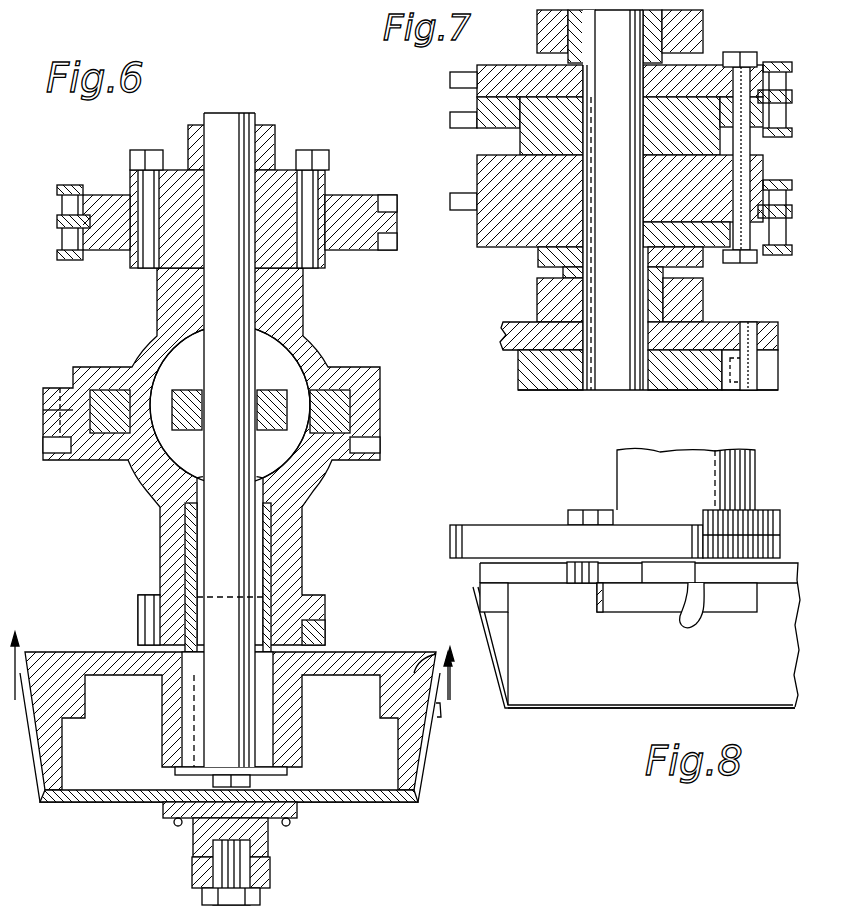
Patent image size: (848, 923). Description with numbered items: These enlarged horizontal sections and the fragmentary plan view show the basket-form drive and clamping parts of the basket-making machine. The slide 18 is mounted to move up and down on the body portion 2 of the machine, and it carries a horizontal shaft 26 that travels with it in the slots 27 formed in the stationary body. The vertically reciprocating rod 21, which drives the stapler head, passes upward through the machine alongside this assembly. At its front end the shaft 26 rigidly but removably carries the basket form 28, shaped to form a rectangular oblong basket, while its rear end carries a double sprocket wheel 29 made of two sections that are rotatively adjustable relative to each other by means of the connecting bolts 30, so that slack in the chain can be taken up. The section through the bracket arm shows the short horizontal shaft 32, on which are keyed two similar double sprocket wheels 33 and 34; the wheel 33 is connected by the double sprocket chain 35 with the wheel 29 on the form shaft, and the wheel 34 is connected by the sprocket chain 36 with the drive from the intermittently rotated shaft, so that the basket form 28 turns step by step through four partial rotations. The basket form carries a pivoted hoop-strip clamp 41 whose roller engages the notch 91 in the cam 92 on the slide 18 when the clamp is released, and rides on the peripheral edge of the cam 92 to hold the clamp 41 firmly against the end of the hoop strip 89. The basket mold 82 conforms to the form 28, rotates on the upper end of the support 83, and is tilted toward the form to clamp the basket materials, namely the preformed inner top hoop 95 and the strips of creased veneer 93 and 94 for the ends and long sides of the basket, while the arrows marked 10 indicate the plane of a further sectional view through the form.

In FIG. 6, the body portion 2 is at (305, 357).
In FIG. 6, the direction of movement arrow 10 is at (245, 660).
In FIG. 8, the direction of movement arrow 10 is at (464, 673).
In FIG. 6, the slide 18 is at (310, 488).
In FIG. 8, the slide 18 is at (630, 483).
In FIG. 6, the vertically reciprocating rod 21 is at (268, 422).
In FIG. 6, the horizontal shaft 26 is at (250, 547).
In FIG. 6, the slots 27 is at (190, 328).
In FIG. 6, the basket form 28 is at (373, 718).
In FIG. 8, the basket form 28 is at (790, 577).
In FIG. 6, the double sprocket wheel 29 is at (347, 247).
In FIG. 6, the connecting bolts 30 is at (143, 180).
In FIG. 7, the short horizontal shaft 32 is at (615, 375).
In FIG. 7, the double sprocket wheel 33 is at (717, 228).
In FIG. 7, the double sprocket wheel 34 is at (720, 67).
In FIG. 6, the double sprocket chain 35 is at (60, 222).
In FIG. 7, the double sprocket chain 35 is at (792, 237).
In FIG. 7, the sprocket chain 36 is at (795, 77).
In FIG. 8, the hoop-strip clamp 41 is at (692, 595).
In FIG. 6, the basket mold 82 is at (383, 803).
In FIG. 6, the support 83 is at (273, 870).
In FIG. 8, the hoop strip 89 is at (740, 597).
In FIG. 6, the notch 91 is at (147, 628).
In FIG. 6, the cam 92 is at (328, 628).
In FIG. 8, the cam 92 is at (778, 530).
In FIG. 6, the strip of creased veneer 93 is at (442, 708).
In FIG. 8, the strip of creased veneer 93 is at (525, 710).
In FIG. 6, the strip of creased veneer 94 is at (338, 787).
In FIG. 8, the strip of creased veneer 94 is at (593, 685).
In FIG. 6, the preformed inner top hoop 95 is at (415, 663).
In FIG. 8, the preformed inner top hoop 95 is at (505, 597).